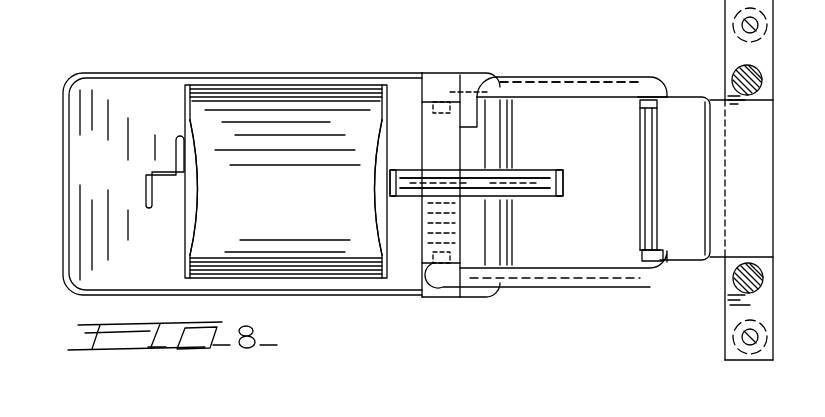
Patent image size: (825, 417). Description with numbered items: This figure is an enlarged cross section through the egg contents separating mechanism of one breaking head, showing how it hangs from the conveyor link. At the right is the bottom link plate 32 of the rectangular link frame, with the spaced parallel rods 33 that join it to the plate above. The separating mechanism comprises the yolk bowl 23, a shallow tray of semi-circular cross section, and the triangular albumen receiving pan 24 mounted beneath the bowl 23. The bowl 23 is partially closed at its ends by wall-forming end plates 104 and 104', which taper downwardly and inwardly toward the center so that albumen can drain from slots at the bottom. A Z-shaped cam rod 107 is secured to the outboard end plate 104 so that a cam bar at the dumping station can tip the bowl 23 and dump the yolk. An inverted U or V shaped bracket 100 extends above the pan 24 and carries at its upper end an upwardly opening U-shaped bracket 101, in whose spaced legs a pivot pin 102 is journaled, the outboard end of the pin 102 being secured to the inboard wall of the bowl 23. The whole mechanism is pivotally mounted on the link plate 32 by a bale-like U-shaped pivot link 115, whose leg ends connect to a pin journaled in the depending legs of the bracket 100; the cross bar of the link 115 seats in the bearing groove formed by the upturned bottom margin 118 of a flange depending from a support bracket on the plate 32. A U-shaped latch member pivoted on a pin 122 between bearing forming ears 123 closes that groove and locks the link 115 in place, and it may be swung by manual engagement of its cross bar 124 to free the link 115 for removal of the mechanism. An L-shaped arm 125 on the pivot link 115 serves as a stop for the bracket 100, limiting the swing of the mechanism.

The albumen receiving pan 24 is at (153, 85).
The yolk bowl 23 is at (310, 98).
The end plate 104 is at (219, 187).
The end plate 104' is at (350, 187).
The Z-shaped cam rod 107 is at (152, 210).
The U-shaped bracket 101 is at (564, 178).
The pivot pin 102 is at (528, 176).
The bracket 100 is at (430, 265).
The pivot link 115 is at (620, 78).
The L-shaped arm 125 is at (533, 82).
The pin 122 is at (668, 93).
The bearing forming ears 123 is at (640, 102).
The cross bar 124 is at (705, 138).
The upturned bottom margin 118 is at (640, 245).
The bottom link plate 32 is at (768, 48).
The rods 33 is at (763, 78).